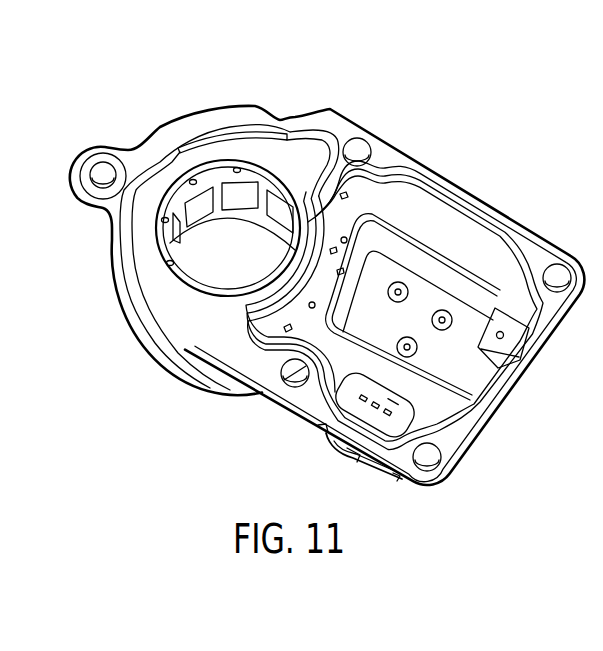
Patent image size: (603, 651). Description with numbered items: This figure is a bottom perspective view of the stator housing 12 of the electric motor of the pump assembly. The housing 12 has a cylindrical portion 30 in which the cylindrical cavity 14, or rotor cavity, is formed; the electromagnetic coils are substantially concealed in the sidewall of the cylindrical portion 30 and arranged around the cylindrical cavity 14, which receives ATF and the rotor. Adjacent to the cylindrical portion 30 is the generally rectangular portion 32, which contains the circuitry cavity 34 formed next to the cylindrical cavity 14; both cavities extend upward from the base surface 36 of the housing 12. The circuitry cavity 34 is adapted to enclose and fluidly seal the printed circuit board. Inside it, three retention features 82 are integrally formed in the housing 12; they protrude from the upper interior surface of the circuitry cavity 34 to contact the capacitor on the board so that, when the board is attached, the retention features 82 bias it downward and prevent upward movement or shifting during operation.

The housing 12 is at (137, 97).
The cylindrical cavity 14 is at (212, 253).
The cylindrical portion 30 is at (130, 352).
The generally rectangular portion 32 is at (480, 250).
The circuitry cavity 34 is at (456, 375).
The base surface 36 is at (270, 372).
The retention features 82 is at (442, 310).